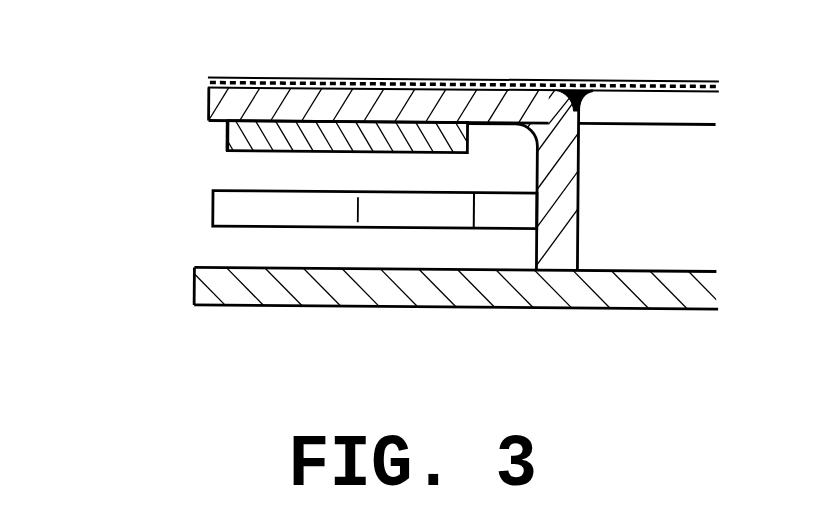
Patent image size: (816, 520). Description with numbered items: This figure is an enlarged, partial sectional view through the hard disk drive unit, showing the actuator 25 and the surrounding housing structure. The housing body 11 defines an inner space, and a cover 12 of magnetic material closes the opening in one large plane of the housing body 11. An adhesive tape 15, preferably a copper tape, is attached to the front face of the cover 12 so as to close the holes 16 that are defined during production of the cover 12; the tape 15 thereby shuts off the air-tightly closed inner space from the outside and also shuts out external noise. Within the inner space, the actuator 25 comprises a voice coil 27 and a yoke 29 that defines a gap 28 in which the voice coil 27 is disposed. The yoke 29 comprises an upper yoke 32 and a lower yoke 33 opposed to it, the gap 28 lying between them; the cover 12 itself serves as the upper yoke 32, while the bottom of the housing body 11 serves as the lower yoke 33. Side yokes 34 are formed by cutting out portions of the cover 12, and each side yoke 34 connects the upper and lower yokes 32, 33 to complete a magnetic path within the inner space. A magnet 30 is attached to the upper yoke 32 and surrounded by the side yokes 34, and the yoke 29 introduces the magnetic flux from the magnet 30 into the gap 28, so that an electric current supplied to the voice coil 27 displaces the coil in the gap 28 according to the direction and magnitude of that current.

The housing body 11 is at (683, 284).
The cover 12 is at (682, 125).
The adhesive tape 15 is at (685, 80).
The holes 16 is at (593, 80).
The actuator 25 is at (116, 177).
The voice coil 27 is at (228, 211).
The gap 28 is at (372, 182).
The yoke 29 is at (227, 268).
The magnet 30 is at (232, 151).
The upper yoke 32 is at (207, 124).
The lower yoke 33 is at (360, 269).
The side yokes 34 is at (577, 230).